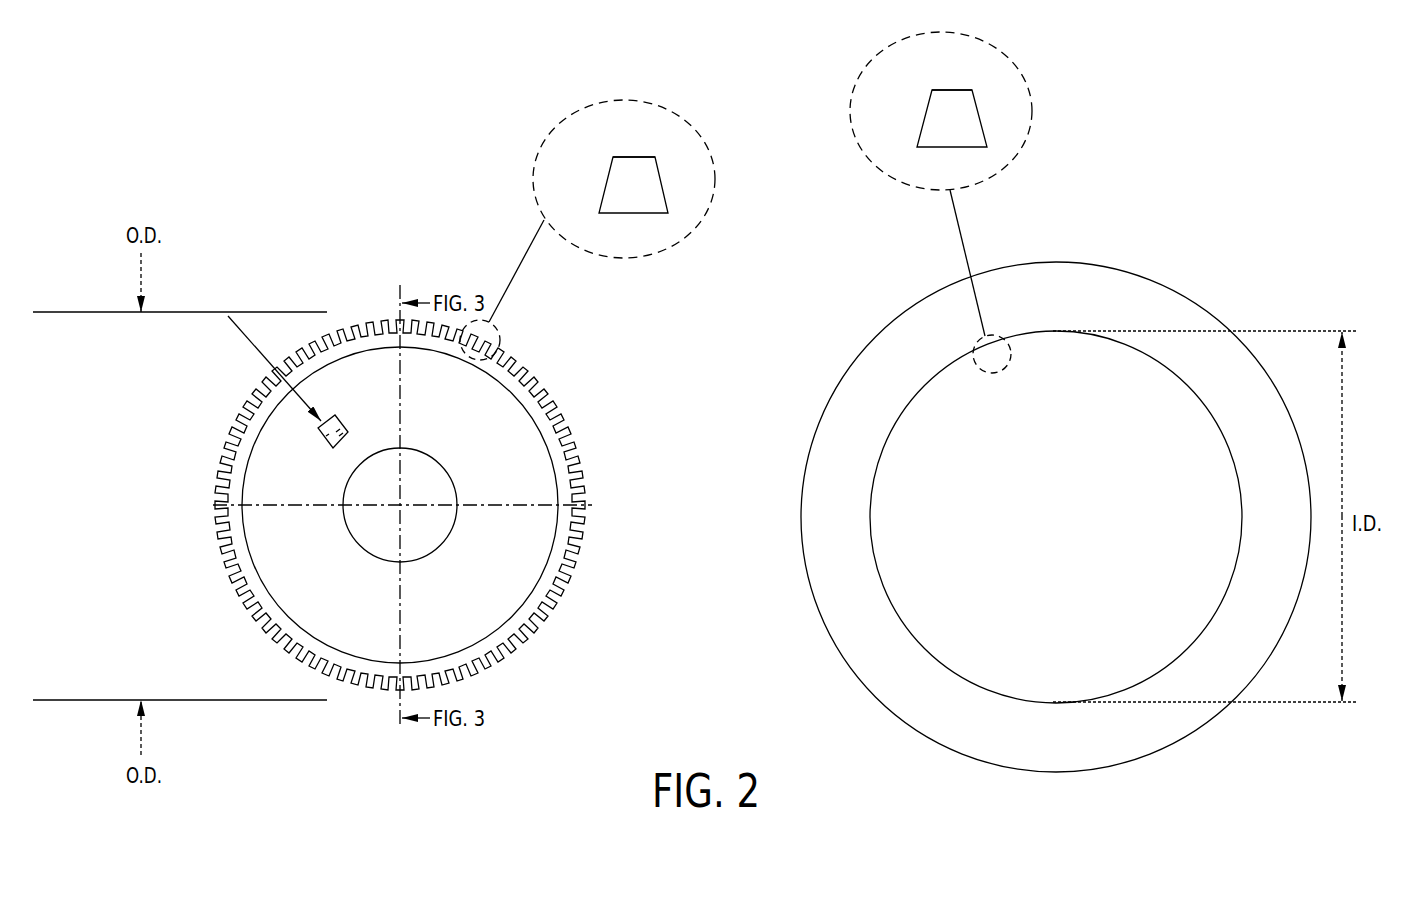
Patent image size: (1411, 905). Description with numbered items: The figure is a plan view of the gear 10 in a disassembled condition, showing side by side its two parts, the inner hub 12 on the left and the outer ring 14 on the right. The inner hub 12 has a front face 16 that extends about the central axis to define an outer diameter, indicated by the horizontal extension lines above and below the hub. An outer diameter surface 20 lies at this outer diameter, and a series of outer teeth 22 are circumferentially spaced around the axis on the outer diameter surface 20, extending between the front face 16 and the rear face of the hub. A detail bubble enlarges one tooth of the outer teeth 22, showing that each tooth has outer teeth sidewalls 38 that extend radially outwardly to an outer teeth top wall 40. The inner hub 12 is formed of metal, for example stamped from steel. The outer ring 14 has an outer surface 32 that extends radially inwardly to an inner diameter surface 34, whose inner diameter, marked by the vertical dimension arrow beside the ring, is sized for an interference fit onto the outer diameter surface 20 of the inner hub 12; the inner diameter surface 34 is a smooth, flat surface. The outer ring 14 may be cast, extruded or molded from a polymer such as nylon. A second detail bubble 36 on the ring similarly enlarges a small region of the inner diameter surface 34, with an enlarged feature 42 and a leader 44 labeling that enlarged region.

The gear 10 is at (1338, 175).
The inner hub 12 is at (506, 350).
The outer ring 14 is at (1226, 312).
The front face 16 is at (268, 456).
The outer diameter surface 20 is at (578, 459).
The outer teeth 22 is at (466, 275).
The outer surface 32 is at (1100, 263).
The inner diameter surface 34 is at (1180, 378).
The detail region 36 is at (858, 82).
The outer teeth sidewalls 38 is at (660, 186).
The outer teeth top wall 40 is at (632, 157).
The tooth 42 is at (977, 118).
The tooth tip 44 is at (945, 92).